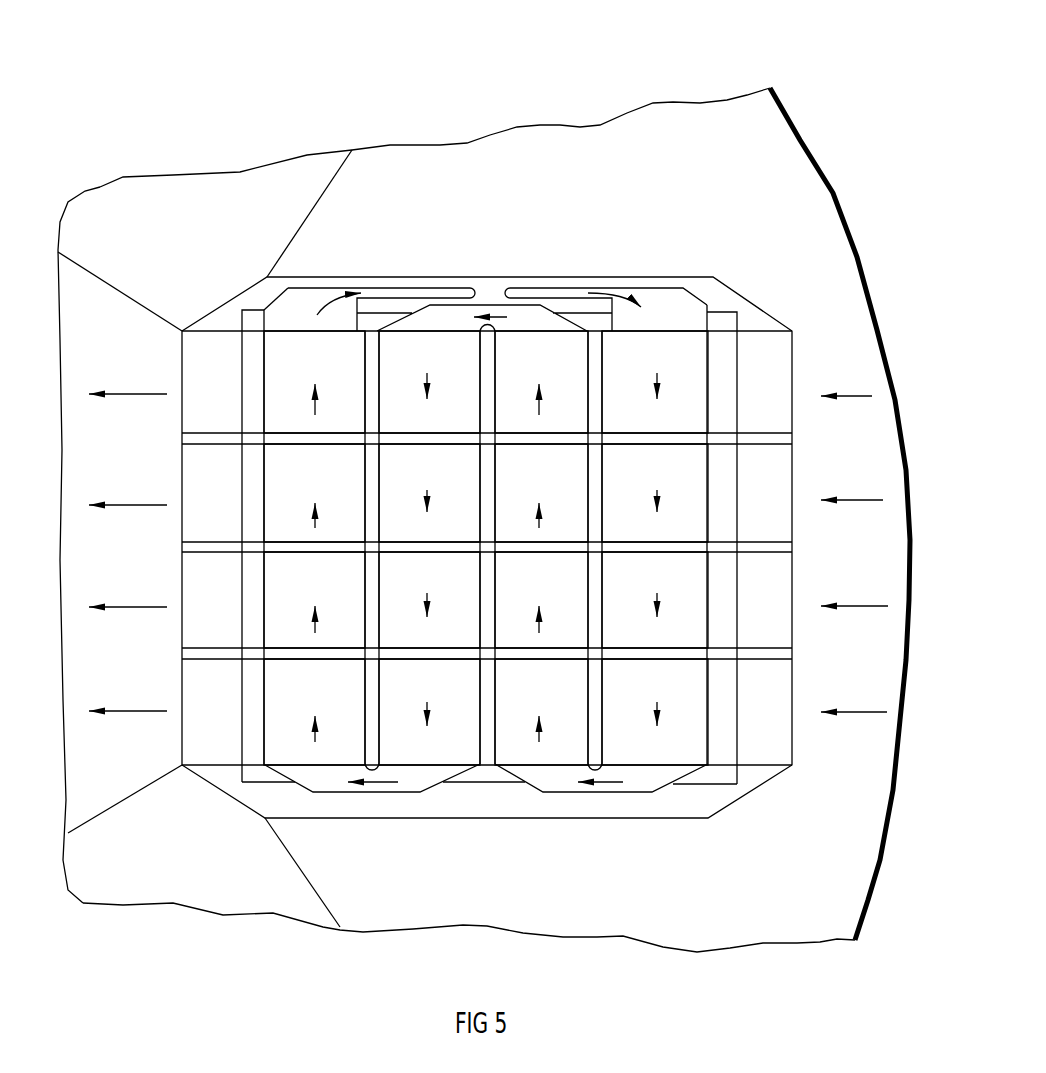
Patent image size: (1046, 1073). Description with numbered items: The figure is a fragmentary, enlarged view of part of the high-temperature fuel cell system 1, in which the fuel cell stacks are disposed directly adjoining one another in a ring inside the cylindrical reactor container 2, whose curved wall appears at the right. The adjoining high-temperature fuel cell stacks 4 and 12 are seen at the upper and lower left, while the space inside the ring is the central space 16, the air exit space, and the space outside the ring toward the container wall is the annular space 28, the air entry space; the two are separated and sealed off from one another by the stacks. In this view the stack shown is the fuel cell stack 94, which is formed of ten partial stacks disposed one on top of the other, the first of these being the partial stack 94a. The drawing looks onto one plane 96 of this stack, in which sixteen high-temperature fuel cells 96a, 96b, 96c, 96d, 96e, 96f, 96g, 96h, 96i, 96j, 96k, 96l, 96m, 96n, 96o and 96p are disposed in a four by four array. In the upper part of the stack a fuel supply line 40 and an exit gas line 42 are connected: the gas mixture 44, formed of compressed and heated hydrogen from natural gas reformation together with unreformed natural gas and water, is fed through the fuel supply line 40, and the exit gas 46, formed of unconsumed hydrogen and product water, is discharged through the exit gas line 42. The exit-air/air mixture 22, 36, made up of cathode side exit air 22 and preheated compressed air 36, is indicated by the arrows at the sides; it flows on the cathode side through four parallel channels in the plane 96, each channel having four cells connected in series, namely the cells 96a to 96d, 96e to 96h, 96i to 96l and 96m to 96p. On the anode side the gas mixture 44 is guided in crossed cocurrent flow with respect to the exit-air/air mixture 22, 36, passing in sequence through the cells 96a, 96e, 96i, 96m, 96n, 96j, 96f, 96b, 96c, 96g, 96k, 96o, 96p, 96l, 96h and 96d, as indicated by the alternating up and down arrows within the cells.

The high-temperature fuel cell system 1 is at (300, 116).
The cylindrical reactor container 2 is at (832, 193).
The high-temperature fuel cell stack 4 is at (338, 168).
The high-temperature fuel cell stack 12 is at (310, 875).
The central space 16 is at (98, 293).
The cathode side exit air 22 is at (123, 398).
The annular space 28 is at (757, 163).
The preheated compressed air 36 is at (848, 398).
The fuel supply line 40 is at (573, 287).
The exit gas line 42 is at (433, 287).
The gas mixture 44 is at (637, 287).
The exit gas 46 is at (348, 280).
The fuel cell stack 94 is at (487, 544).
The partial stack 94a is at (493, 277).
The plane 96 is at (702, 842).
The high-temperature fuel cell 96a is at (655, 382).
The high-temperature fuel cell 96b is at (541, 382).
The high-temperature fuel cell 96c is at (429, 382).
The high-temperature fuel cell 96d is at (314, 382).
The high-temperature fuel cell 96e is at (655, 493).
The high-temperature fuel cell 96f is at (541, 493).
The high-temperature fuel cell 96g is at (429, 493).
The high-temperature fuel cell 96h is at (314, 493).
The high-temperature fuel cell 96i is at (655, 600).
The high-temperature fuel cell 96j is at (541, 600).
The high-temperature fuel cell 96k is at (429, 600).
The high-temperature fuel cell 96l is at (314, 600).
The high-temperature fuel cell 96m is at (655, 712).
The high-temperature fuel cell 96n is at (541, 712).
The high-temperature fuel cell 96o is at (429, 712).
The high-temperature fuel cell 96p is at (314, 712).